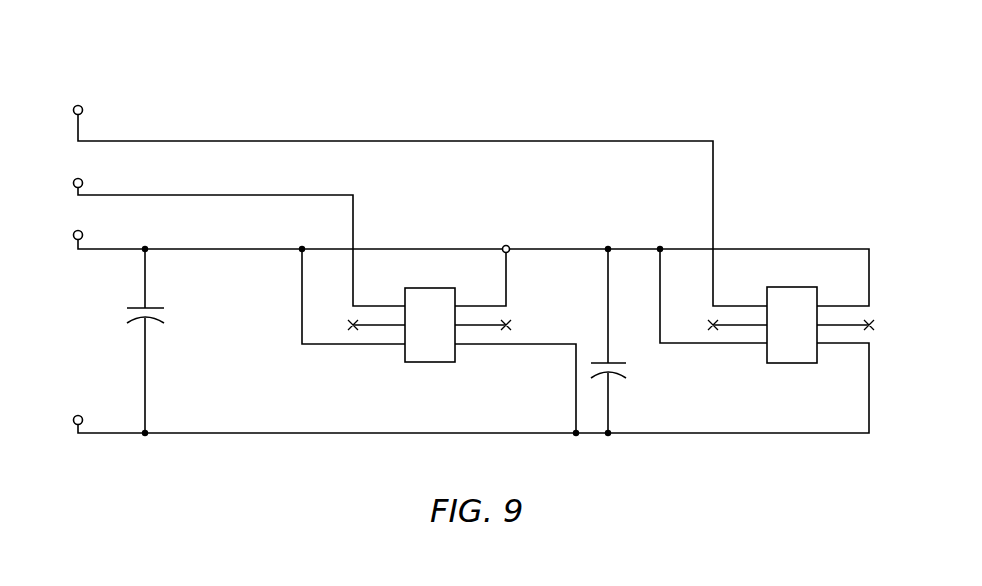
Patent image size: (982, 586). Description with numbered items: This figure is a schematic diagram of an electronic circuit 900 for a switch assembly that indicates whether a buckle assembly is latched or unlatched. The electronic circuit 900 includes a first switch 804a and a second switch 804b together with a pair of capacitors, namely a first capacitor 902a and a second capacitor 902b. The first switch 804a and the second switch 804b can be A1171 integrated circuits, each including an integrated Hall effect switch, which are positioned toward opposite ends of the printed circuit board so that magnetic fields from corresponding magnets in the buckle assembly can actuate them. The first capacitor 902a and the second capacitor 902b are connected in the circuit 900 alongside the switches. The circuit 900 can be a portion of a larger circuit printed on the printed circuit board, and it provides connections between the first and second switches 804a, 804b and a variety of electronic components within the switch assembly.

The electronic circuit 900 is at (482, 87).
The first capacitor 902a is at (114, 316).
The second capacitor 902b is at (581, 367).
The first switch 804a is at (403, 356).
The second switch 804b is at (791, 286).